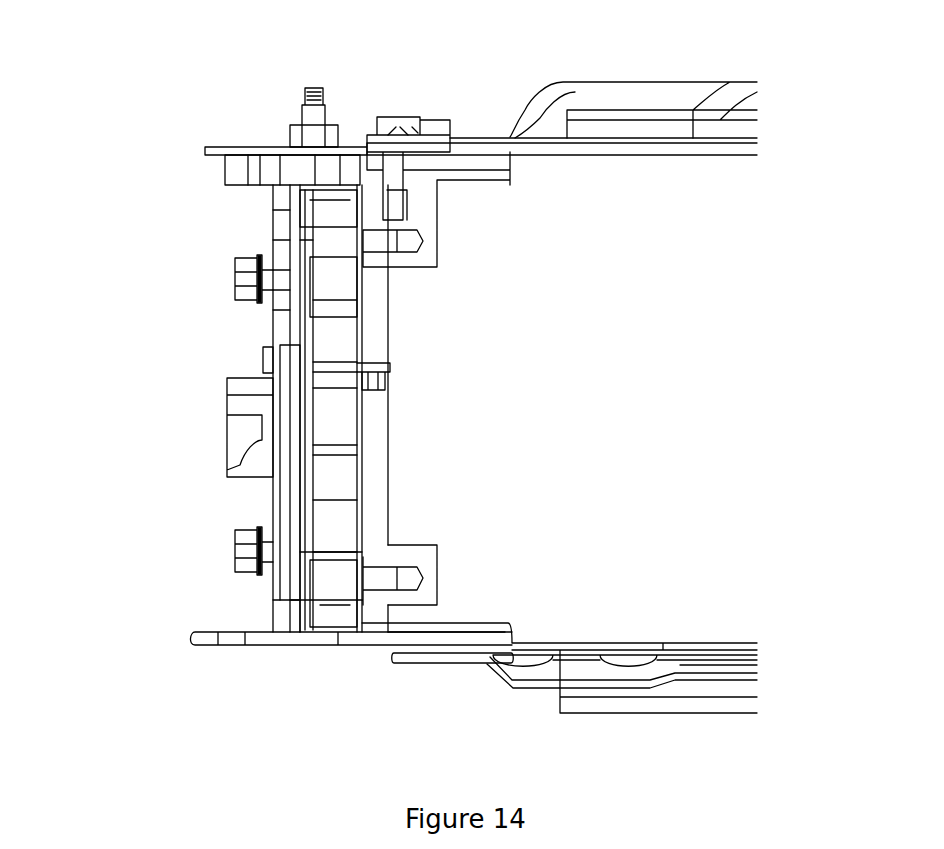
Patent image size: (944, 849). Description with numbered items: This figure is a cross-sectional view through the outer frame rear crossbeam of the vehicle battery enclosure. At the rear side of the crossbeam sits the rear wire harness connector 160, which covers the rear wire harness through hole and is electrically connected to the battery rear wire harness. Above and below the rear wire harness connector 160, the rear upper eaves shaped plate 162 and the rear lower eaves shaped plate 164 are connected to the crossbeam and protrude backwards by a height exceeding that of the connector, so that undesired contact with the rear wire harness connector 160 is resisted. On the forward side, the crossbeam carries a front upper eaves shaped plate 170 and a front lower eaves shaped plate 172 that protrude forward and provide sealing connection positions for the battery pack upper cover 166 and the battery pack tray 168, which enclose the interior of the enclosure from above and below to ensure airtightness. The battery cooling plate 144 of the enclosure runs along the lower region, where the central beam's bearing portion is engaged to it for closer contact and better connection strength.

The battery cooling plate 144 is at (720, 643).
The rear wire harness connector 160 is at (243, 387).
The rear upper eaves shaped plate 162 is at (205, 150).
The rear lower eaves shaped plate 164 is at (195, 637).
The battery pack upper cover 166 is at (505, 98).
The battery pack tray 168 is at (490, 668).
The front upper eaves shaped plate 170 is at (430, 137).
The front lower eaves shaped plate 172 is at (463, 637).